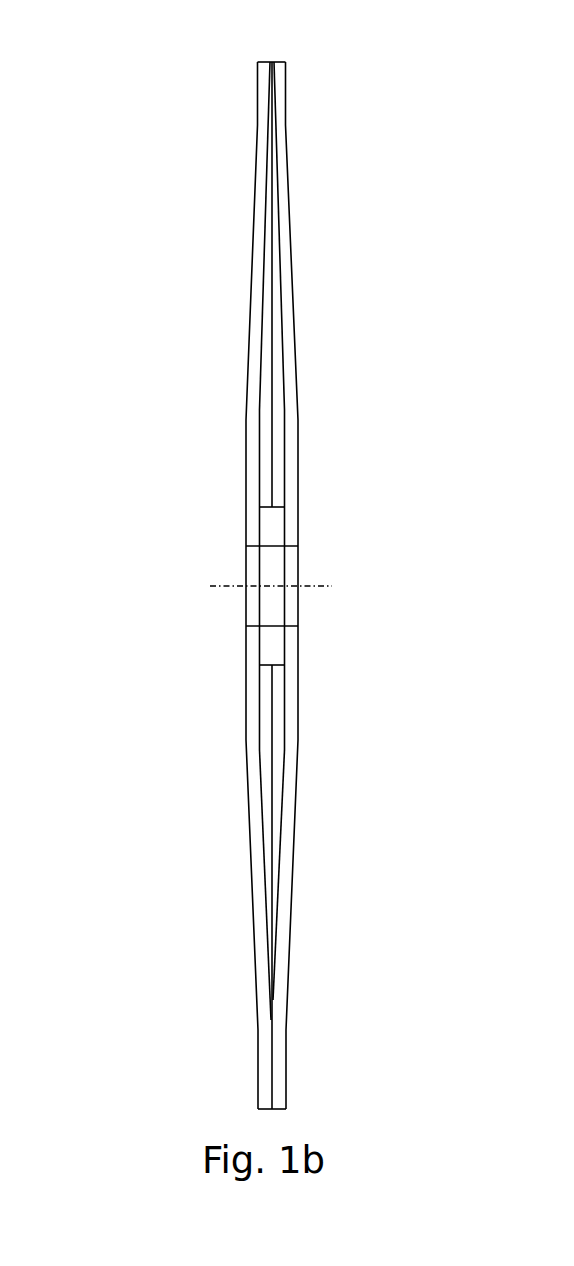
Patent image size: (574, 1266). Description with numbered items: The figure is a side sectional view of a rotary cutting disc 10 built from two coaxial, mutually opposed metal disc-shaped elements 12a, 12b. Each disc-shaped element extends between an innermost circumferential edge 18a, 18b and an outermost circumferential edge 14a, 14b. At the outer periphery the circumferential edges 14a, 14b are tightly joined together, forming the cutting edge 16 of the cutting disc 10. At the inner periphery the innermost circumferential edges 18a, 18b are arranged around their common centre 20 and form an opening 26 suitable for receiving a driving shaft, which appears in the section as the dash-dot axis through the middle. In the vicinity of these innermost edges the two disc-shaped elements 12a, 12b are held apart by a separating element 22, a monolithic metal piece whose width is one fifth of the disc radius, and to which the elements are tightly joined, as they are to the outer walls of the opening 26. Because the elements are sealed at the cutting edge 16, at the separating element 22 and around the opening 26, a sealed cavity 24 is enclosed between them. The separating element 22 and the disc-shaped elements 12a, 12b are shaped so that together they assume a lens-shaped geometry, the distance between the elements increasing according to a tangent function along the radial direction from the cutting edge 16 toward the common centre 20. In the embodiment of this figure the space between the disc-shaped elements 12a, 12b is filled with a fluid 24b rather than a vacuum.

The rotary cutting disc 10 is at (182, 515).
The disc-shaped element 12a is at (253, 818).
The disc-shaped element 12b is at (288, 818).
The circumferential edge 14a is at (259, 63).
The circumferential edge 14b is at (285, 63).
The cutting edge 16 is at (272, 62).
The innermost circumferential edge 18a is at (250, 548).
The innermost circumferential edge 18b is at (286, 545).
The common centre 20 is at (303, 582).
The separating element 22 is at (272, 520).
The sealed cavity 24 is at (280, 368).
The fluid 24b is at (278, 732).
The opening 26 is at (304, 600).